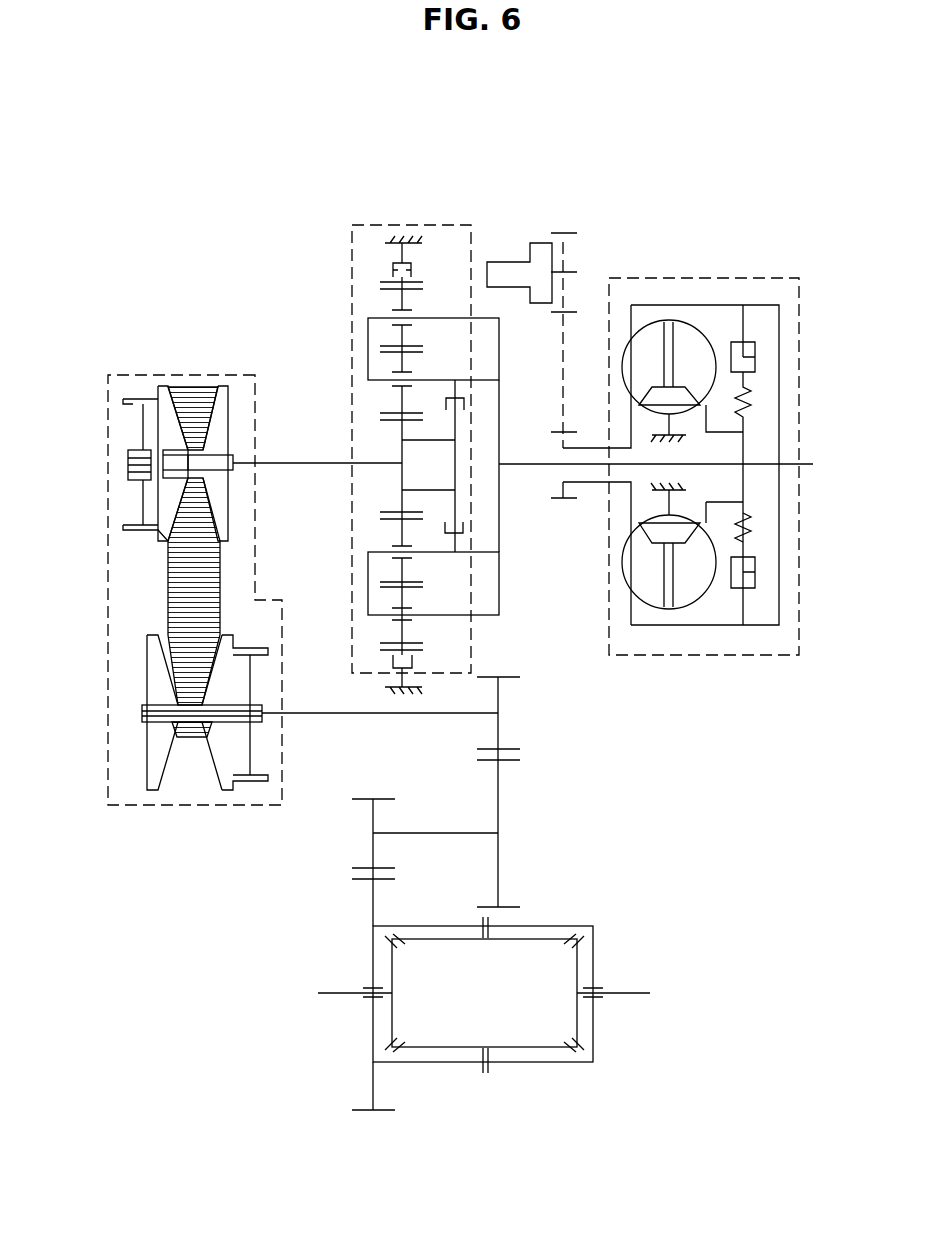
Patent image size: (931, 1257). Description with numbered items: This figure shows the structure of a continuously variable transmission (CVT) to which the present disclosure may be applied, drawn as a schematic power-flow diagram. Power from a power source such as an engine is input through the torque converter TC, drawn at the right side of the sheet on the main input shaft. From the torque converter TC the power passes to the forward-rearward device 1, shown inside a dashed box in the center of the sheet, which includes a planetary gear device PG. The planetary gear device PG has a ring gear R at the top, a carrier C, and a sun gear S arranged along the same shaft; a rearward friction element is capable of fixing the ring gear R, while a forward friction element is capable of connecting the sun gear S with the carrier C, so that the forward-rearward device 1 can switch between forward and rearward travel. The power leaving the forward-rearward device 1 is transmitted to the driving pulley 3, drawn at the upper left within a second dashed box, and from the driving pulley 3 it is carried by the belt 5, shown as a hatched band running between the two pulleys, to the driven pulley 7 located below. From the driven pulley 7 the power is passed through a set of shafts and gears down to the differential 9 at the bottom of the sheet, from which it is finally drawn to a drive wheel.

The forward-rearward device 1 is at (442, 224).
The driving pulley 3 is at (157, 425).
The belt 5 is at (167, 590).
The driven pulley 7 is at (153, 750).
The differential 9 is at (594, 920).
The ring gear R is at (385, 280).
The planetary gear device PG is at (366, 306).
The carrier C is at (368, 343).
The sun gear S is at (396, 423).
The torque converter TC is at (712, 278).